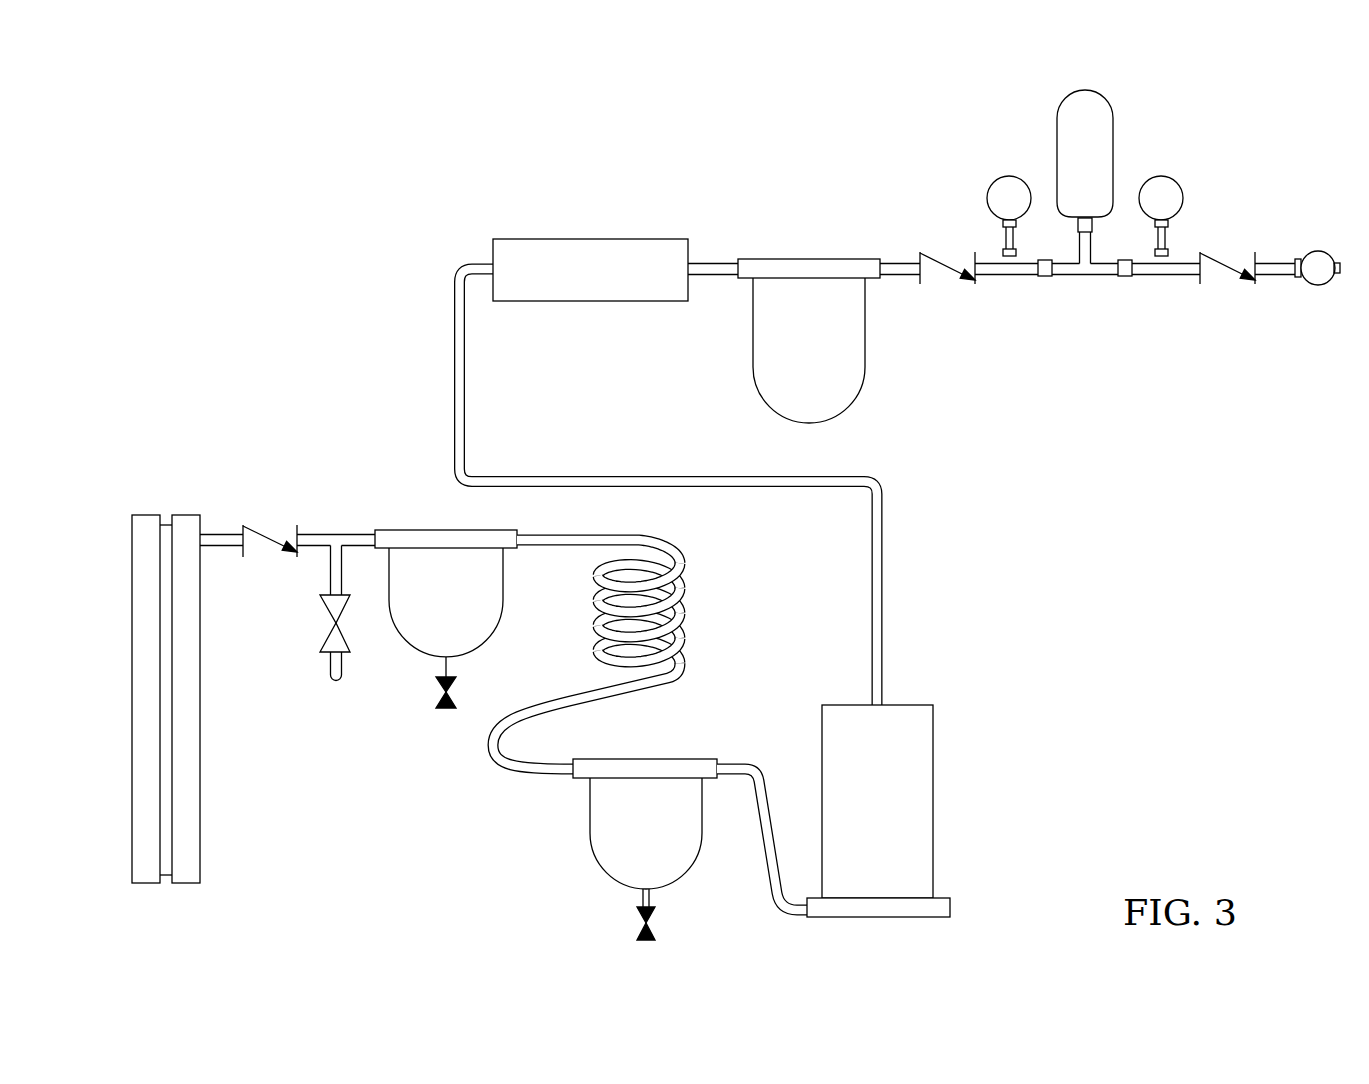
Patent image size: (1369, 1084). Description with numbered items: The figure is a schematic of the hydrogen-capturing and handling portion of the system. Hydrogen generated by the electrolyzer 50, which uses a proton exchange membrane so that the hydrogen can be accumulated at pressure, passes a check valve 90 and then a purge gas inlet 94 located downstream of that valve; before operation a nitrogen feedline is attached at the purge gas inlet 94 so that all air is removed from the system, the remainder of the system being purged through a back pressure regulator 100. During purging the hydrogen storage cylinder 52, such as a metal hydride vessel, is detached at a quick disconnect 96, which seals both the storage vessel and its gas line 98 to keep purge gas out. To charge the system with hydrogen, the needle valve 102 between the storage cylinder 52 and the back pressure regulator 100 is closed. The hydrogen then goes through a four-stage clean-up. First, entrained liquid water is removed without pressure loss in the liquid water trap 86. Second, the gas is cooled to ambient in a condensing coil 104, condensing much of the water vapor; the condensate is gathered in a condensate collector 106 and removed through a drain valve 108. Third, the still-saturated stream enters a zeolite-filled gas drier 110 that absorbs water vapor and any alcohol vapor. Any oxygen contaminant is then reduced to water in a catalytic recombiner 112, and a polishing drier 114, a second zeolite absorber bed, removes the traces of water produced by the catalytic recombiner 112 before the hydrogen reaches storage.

The electrolyzer 50 is at (200, 835).
The hydrogen storage cylinder 52 is at (1057, 135).
The liquid water trap 86 is at (460, 530).
The check valve 90 is at (267, 532).
The purge gas inlet 94 is at (335, 622).
The quick disconnect 96 is at (1092, 232).
The gas line 98 is at (1070, 276).
The back pressure regulator 100 is at (1318, 247).
The needle valve 102 is at (1123, 276).
The condensing coil 104 is at (683, 560).
The condensate collector 106 is at (590, 830).
The drain valve 108 is at (640, 920).
The gas drier 110 is at (932, 802).
The catalytic recombiner 112 is at (568, 237).
The polishing drier 114 is at (852, 398).